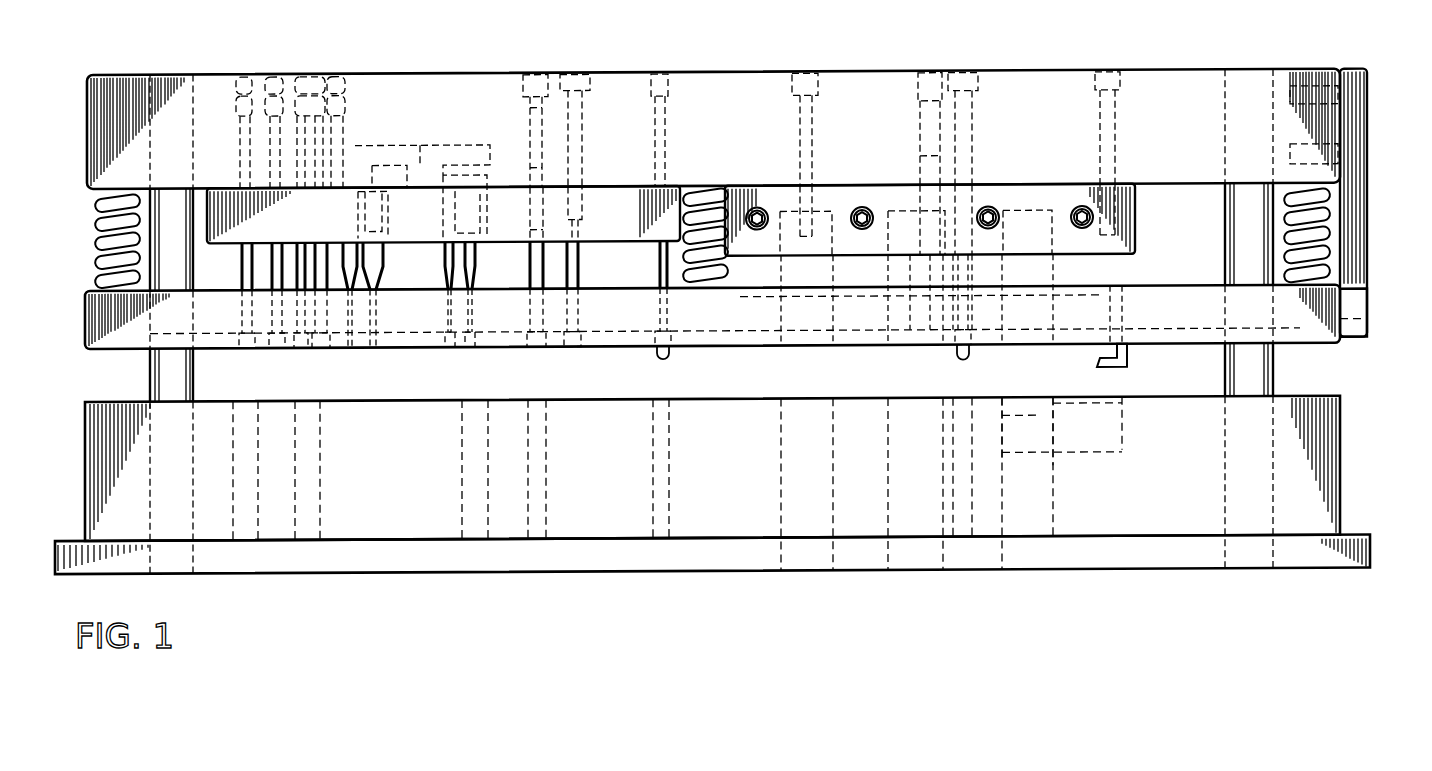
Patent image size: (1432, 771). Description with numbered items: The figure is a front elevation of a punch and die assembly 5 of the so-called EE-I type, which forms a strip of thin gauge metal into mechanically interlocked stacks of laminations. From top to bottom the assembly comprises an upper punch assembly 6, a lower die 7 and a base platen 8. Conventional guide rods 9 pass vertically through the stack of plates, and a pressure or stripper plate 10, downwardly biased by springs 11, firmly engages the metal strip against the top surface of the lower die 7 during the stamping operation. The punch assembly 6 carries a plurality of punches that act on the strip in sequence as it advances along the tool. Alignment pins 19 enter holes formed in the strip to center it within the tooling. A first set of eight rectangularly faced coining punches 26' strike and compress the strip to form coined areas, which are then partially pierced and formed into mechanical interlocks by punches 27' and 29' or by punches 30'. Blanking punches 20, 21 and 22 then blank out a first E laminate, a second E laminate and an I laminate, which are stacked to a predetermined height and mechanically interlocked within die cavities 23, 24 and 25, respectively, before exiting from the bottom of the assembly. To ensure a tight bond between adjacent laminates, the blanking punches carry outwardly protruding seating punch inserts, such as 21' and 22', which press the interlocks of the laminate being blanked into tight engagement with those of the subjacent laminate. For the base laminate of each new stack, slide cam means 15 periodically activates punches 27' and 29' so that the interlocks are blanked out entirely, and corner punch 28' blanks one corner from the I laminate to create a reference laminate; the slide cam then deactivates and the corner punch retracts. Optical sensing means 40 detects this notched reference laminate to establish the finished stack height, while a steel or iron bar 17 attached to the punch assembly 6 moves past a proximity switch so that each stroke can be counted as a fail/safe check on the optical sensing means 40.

The punch and die assembly 5 is at (1010, 68).
The upper punch assembly 6 is at (1368, 140).
The lower die 7 is at (1344, 470).
The base platen 8 is at (1370, 553).
The guide rods 9 is at (152, 380).
The pressure or stripper plate 10 is at (1371, 305).
The springs 11 is at (97, 248).
The slide cam means 15 is at (432, 146).
The steel or iron bar 17 is at (1130, 362).
The alignment pins 19 is at (655, 355).
The blanking punch 20 is at (812, 265).
The blanking punch 21 is at (884, 324).
The punch insert 21' is at (895, 327).
The blanking punch 22 is at (1022, 323).
The punch insert 22' is at (973, 324).
The die cavity 23 is at (814, 522).
The die cavity 24 is at (928, 530).
The die cavity 25 is at (1038, 525).
The coining punches 26' is at (275, 323).
The punch 27' is at (342, 322).
The corner punch 28' is at (395, 322).
The punch 29' is at (488, 322).
The punch 30' is at (561, 321).
The optical sensing means 40 is at (1124, 443).